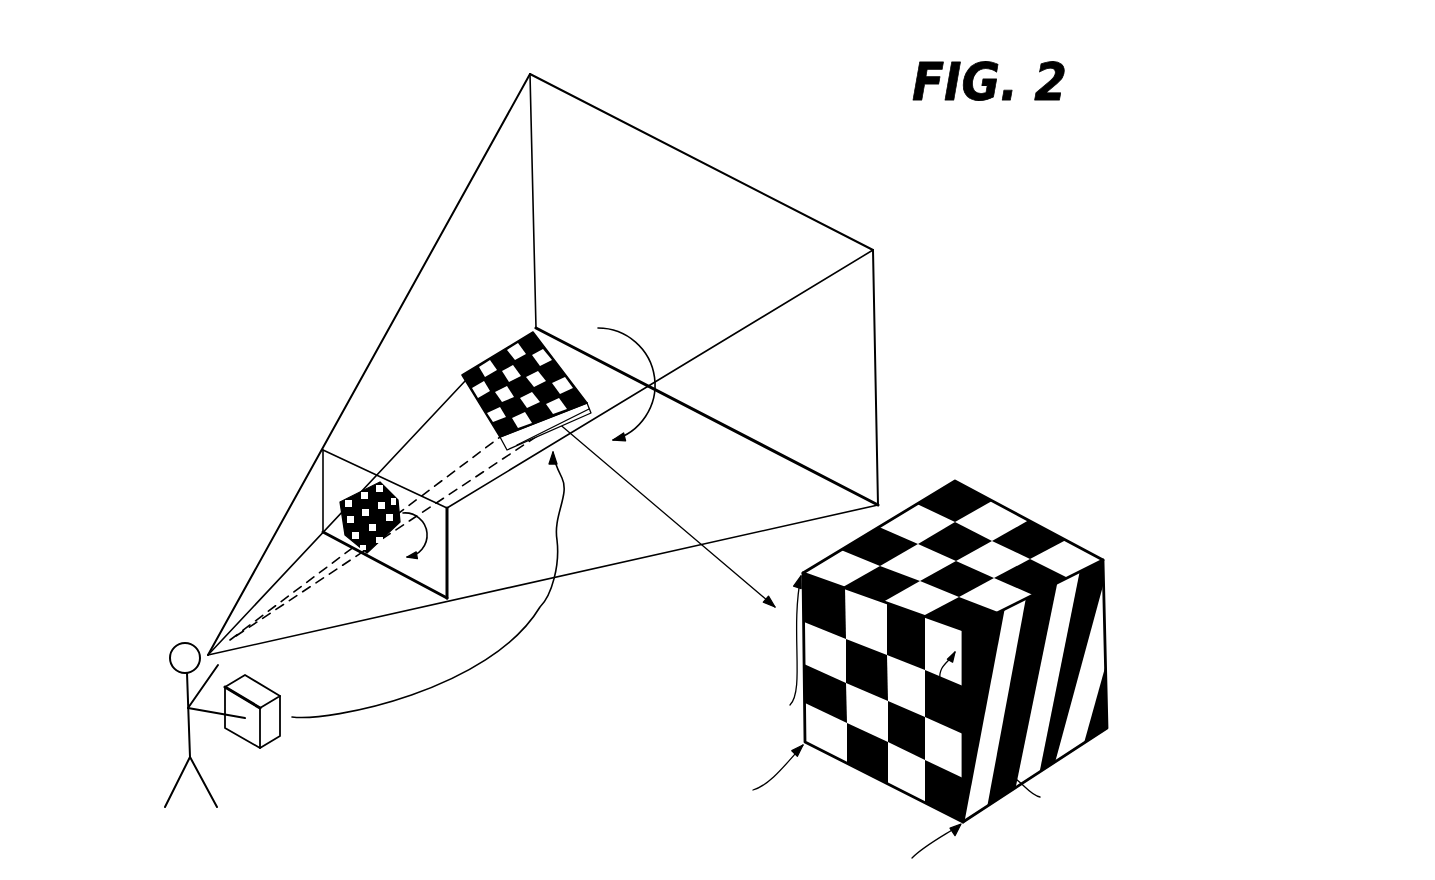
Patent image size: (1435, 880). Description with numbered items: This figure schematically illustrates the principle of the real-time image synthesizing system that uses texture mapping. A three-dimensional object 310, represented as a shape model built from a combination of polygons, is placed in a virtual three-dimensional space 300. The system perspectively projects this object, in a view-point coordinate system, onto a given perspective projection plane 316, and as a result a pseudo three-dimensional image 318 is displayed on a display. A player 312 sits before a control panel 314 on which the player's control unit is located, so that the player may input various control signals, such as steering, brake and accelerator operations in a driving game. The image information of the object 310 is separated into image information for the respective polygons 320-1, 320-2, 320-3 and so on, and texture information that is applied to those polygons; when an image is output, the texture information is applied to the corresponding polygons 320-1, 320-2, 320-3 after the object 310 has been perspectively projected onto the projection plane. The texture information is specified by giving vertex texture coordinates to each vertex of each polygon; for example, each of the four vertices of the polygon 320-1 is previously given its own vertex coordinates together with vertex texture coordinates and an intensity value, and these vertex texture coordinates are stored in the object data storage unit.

The virtual 3-D space 300 is at (817, 504).
The 3-D object 310 is at (577, 348).
The player 312 is at (185, 643).
The control panel 314 is at (273, 732).
The perspective projection plane 316 is at (435, 565).
The pseudo 3-D image 318 is at (358, 475).
The polygon 320-1 is at (860, 780).
The polygon 320-2 is at (1117, 683).
The polygon 320-3 is at (1018, 503).